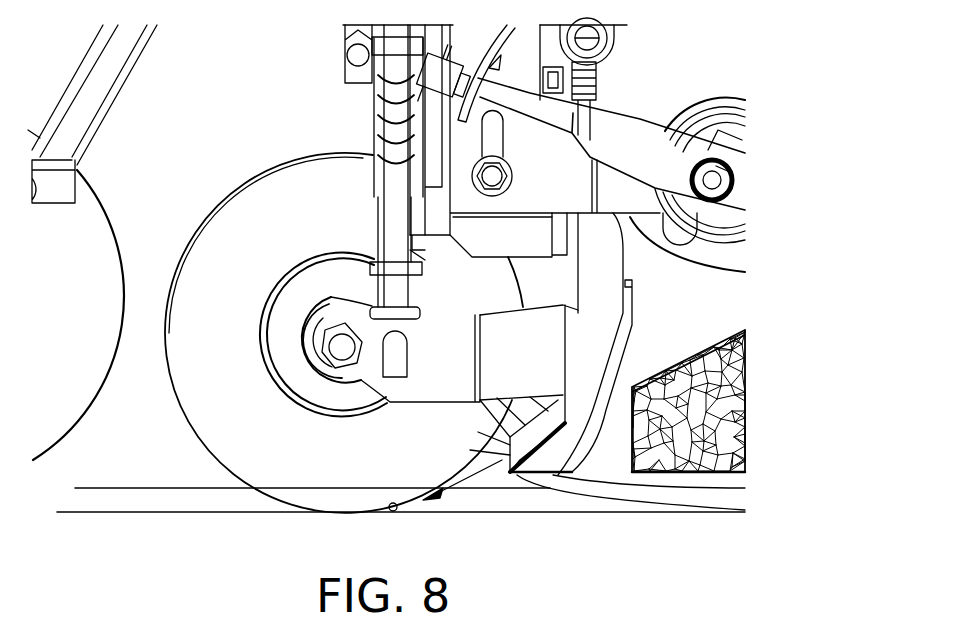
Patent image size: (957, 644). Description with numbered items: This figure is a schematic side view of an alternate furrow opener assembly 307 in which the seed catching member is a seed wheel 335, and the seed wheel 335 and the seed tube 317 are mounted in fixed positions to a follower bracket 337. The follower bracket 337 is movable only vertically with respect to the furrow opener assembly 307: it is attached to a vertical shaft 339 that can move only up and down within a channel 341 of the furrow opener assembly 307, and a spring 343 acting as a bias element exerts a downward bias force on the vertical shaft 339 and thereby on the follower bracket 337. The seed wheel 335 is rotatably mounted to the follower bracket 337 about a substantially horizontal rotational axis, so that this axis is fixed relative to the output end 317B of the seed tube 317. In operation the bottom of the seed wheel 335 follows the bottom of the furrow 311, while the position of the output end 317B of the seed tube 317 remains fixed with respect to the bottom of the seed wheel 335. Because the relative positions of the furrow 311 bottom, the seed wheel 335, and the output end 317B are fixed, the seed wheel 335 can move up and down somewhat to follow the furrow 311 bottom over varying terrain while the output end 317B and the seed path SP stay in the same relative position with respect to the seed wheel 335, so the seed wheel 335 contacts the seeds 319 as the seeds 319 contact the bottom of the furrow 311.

The furrow opener assembly 307 is at (650, 77).
The furrow 311 is at (198, 500).
The seed tube 317 is at (533, 393).
The output end of the seed tube 317B is at (520, 515).
The seeds 319 is at (395, 512).
The seed wheel 335 is at (180, 410).
The follower bracket 337 is at (400, 403).
The vertical shaft 339 is at (378, 292).
The channel 341 is at (383, 195).
The spring 343 is at (378, 128).
The seed path SP is at (473, 487).